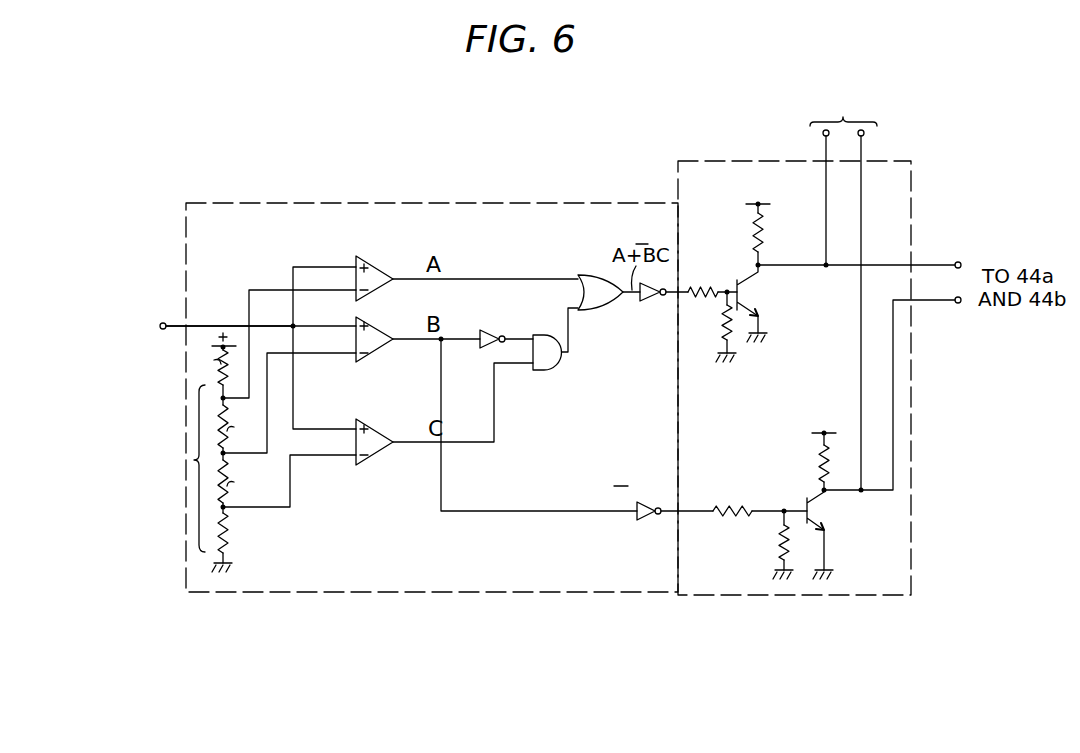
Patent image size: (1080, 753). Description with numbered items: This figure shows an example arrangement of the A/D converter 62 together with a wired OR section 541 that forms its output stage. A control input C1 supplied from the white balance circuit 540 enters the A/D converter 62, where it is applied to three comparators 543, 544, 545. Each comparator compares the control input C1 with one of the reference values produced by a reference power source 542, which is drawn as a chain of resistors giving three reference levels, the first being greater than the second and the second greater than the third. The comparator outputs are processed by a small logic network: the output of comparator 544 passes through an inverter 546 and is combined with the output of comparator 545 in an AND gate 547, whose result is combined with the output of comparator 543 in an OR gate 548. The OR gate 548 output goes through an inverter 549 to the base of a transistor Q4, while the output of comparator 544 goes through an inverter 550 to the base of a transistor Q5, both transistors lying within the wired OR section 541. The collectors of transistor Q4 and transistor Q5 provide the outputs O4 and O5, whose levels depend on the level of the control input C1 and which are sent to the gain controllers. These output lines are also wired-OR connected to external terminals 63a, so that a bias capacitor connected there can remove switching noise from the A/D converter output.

The A/D converter 62 is at (422, 203).
The wired OR section 541 is at (730, 161).
The reference power source 542 is at (194, 460).
The comparator 543 is at (385, 273).
The comparator 544 is at (385, 333).
The comparator 545 is at (383, 436).
The inverter 546 is at (495, 333).
The AND gate 547 is at (552, 370).
The OR gate 548 is at (600, 312).
The inverter 549 is at (652, 300).
The inverter 550 is at (645, 501).
The external terminals 63a is at (843, 117).
The white balance circuit 540 is at (200, 327).
The control input C1 is at (173, 325).
The transistor Q4 is at (752, 302).
The transistor Q5 is at (822, 522).
The output O4 is at (937, 263).
The output O5 is at (930, 303).